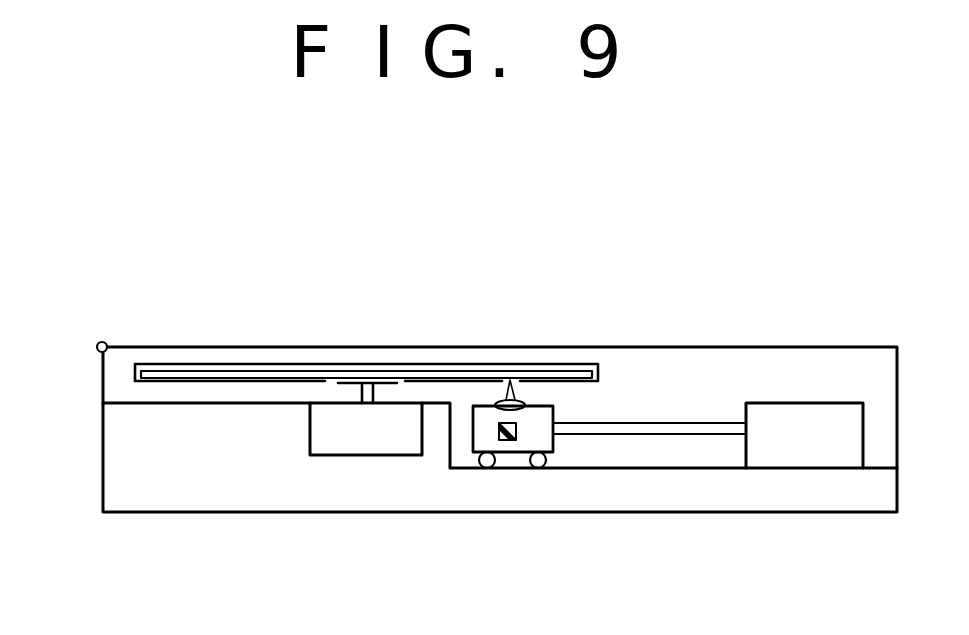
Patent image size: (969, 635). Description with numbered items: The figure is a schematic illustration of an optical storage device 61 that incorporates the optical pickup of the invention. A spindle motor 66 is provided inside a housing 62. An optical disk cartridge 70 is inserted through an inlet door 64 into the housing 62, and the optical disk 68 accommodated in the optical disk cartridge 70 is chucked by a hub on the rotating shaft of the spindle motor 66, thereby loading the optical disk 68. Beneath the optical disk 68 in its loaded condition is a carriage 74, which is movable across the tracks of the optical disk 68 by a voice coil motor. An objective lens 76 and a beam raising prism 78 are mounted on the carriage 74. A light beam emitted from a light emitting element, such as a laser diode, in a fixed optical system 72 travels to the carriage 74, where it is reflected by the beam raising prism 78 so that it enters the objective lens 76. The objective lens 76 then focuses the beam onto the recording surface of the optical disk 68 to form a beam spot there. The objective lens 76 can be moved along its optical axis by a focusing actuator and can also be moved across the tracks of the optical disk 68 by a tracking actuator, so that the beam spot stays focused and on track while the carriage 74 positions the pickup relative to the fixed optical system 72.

The optical storage device 61 is at (607, 332).
The housing 62 is at (718, 348).
The inlet door 64 is at (102, 372).
The spindle motor 66 is at (362, 450).
The optical disk 68 is at (415, 371).
The optical disk cartridge 70 is at (198, 364).
The fixed optical system 72 is at (818, 413).
The carriage 74 is at (552, 443).
The objective lens 76 is at (522, 402).
The beam raising prism 78 is at (504, 441).